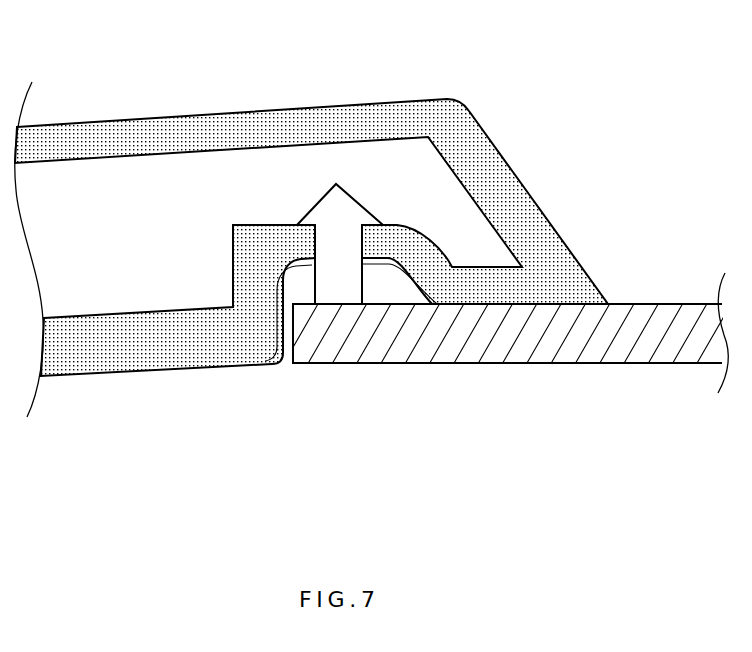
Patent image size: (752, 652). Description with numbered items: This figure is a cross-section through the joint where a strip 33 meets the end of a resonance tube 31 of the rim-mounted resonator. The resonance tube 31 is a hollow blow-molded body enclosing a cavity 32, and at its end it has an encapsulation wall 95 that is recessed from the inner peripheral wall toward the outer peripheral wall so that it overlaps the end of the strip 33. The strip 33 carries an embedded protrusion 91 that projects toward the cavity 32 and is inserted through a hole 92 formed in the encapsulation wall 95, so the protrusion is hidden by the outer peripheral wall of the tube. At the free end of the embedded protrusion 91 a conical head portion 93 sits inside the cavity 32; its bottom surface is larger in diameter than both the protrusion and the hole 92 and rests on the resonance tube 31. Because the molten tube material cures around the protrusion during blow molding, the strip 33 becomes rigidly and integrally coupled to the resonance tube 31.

The resonance tube 31 is at (373, 229).
The cavity 32 is at (208, 182).
The strip 33 is at (662, 320).
The embedded protrusion 91 is at (342, 244).
The hole 92 is at (312, 250).
The head portion 93 is at (340, 205).
The encapsulation wall 95 is at (262, 233).